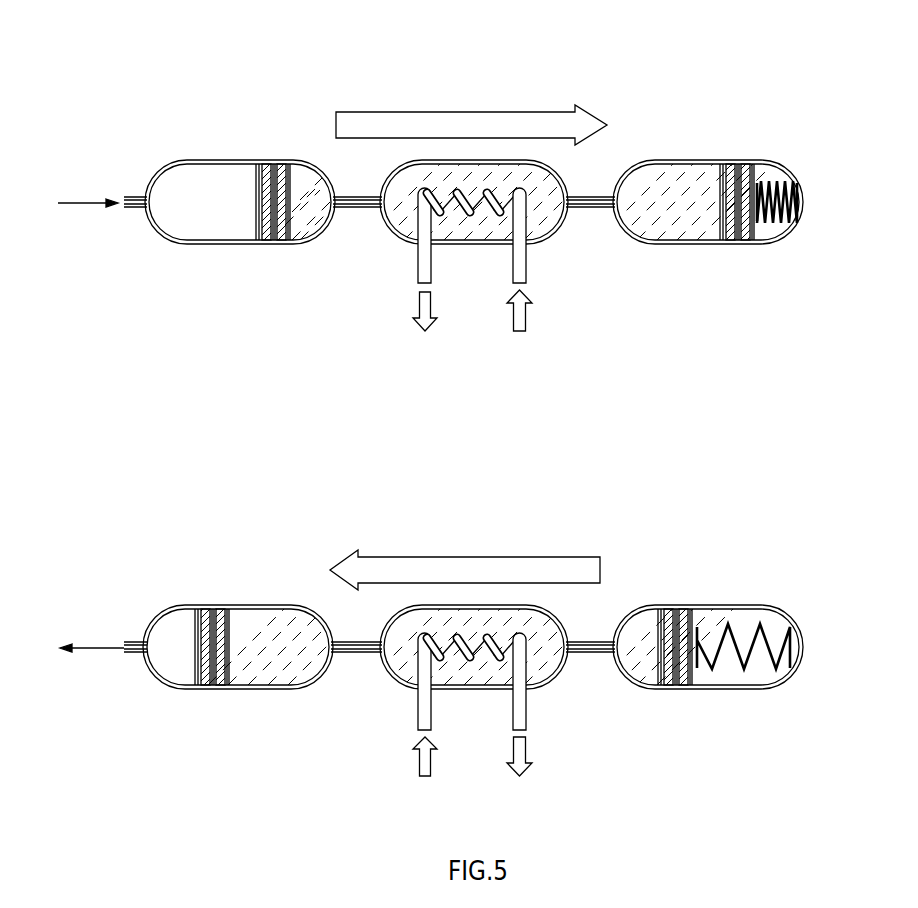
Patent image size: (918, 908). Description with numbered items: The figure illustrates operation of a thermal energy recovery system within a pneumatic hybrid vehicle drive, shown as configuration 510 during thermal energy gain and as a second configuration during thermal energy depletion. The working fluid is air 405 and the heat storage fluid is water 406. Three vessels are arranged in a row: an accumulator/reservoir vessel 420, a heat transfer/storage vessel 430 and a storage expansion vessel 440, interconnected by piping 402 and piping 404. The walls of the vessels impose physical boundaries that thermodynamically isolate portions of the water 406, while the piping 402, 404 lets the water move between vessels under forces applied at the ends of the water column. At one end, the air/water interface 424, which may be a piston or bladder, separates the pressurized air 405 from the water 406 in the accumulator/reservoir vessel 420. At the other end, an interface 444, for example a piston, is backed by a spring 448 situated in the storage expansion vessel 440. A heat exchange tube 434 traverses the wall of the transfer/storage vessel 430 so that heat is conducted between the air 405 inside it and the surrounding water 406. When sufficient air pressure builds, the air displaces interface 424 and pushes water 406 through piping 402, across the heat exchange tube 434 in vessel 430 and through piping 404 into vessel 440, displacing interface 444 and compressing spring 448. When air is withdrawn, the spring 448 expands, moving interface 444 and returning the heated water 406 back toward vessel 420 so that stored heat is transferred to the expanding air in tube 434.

The configuration 510 is at (490, 78).
The air 405 is at (218, 212).
The water 406 is at (317, 212).
The accumulator/reservoir vessel 420 is at (208, 246).
The interface 424 is at (276, 244).
The piping 402 is at (360, 212).
The heat transfer/storage vessel 430 is at (562, 172).
The heat exchange tube 434 is at (529, 261).
The piping 404 is at (593, 212).
The storage expansion vessel 440 is at (683, 246).
The interface 444 is at (738, 244).
The spring 448 is at (775, 182).